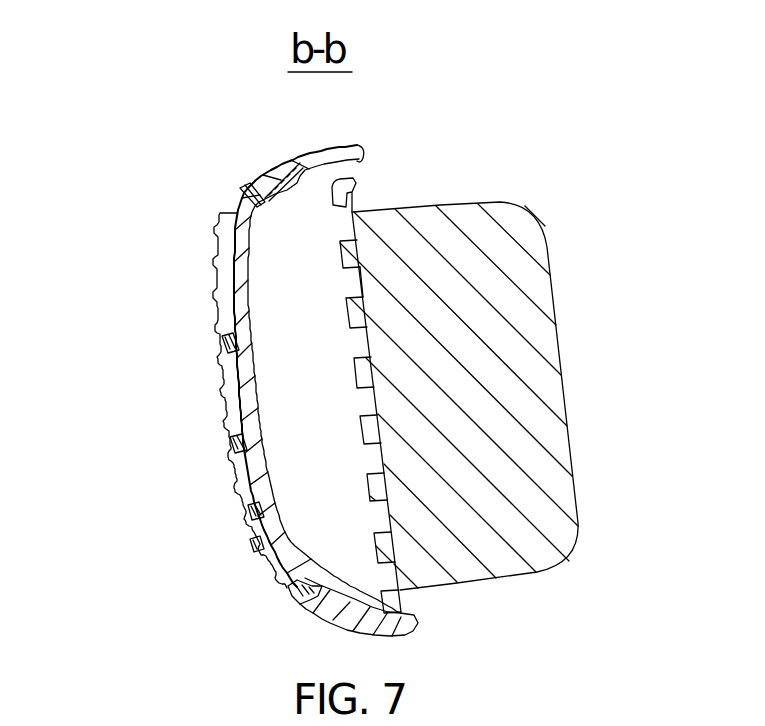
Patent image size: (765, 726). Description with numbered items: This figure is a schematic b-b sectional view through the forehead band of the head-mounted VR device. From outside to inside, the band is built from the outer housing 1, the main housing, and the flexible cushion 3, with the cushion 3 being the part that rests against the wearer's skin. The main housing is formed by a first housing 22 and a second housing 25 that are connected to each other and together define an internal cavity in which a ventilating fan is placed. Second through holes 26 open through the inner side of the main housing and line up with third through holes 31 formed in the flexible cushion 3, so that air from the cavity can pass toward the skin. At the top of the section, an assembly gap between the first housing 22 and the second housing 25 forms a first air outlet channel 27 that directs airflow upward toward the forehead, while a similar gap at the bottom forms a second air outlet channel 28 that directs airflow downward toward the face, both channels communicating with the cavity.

The outer housing 1 is at (257, 537).
The flexible cushion 3 is at (500, 389).
The first housing 22 is at (245, 445).
The second housing 25 is at (368, 427).
The second through holes 26 is at (347, 283).
The first air outlet channel 27 is at (357, 145).
The second air outlet channel 28 is at (305, 603).
The third through holes 31 is at (353, 266).